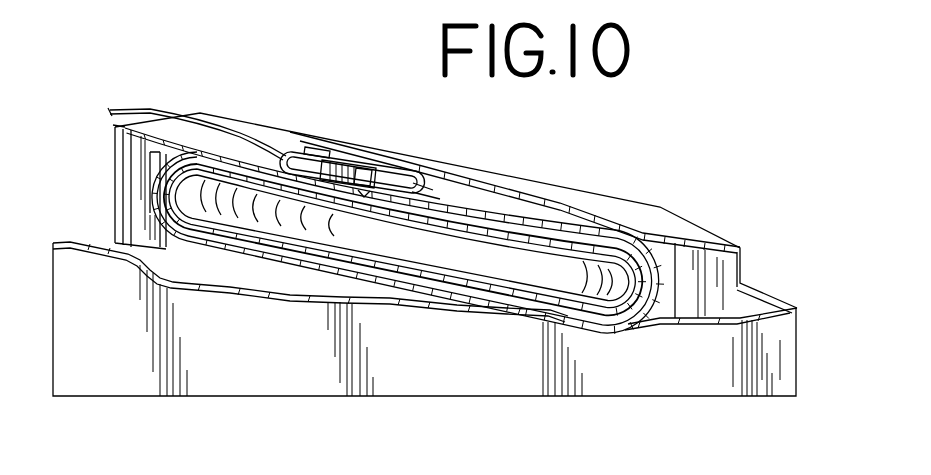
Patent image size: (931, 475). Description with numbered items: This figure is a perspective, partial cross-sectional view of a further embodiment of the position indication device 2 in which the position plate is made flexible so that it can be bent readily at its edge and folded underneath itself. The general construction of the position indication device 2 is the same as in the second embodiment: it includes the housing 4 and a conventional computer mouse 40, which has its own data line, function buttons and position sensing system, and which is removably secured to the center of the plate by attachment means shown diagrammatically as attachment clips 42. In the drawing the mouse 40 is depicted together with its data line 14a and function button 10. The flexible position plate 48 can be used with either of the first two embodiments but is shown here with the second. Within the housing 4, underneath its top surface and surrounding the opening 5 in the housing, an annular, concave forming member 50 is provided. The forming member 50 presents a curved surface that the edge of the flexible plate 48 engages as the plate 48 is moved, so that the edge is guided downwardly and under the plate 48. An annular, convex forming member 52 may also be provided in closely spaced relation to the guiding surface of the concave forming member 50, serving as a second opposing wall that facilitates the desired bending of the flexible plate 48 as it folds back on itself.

The position indication device 2 is at (722, 224).
The housing 4 is at (773, 348).
The opening 5 is at (560, 225).
The cable connector housing 10 is at (313, 150).
The cable 14a is at (142, 112).
The computer mouse 40 is at (432, 190).
The attachment clips 42 is at (356, 172).
The flexible position plate 48 is at (500, 205).
The concave forming member 50 is at (158, 180).
The convex forming member 52 is at (160, 208).